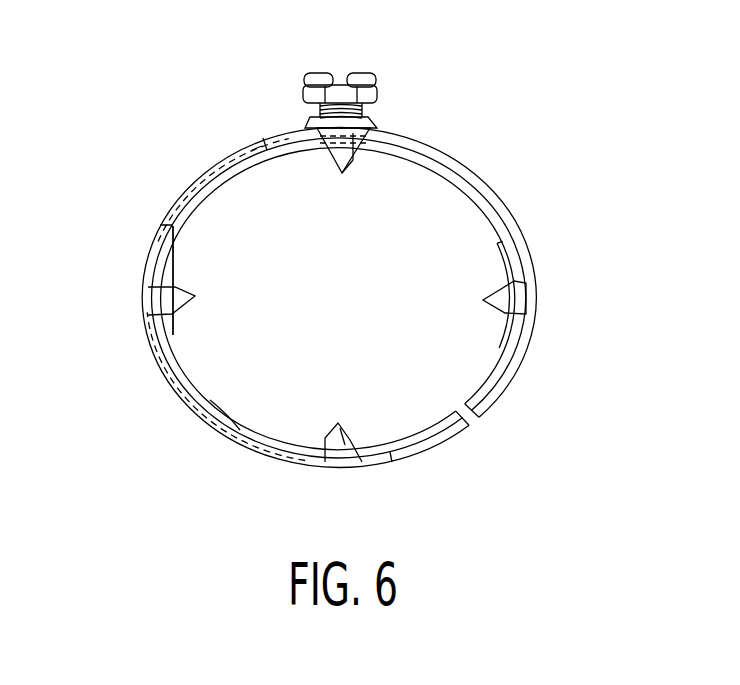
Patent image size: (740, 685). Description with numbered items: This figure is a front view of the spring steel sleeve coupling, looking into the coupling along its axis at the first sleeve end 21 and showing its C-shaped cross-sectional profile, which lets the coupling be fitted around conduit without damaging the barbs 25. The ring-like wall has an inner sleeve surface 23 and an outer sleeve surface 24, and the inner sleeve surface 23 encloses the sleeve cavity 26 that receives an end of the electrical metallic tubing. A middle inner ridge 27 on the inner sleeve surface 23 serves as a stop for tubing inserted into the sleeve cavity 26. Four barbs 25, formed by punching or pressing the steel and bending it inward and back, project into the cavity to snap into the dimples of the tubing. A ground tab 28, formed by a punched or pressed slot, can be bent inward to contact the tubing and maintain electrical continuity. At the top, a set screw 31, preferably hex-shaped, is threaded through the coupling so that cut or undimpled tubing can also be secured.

The first sleeve end 21 is at (173, 207).
The inner sleeve surface 23 is at (227, 407).
The outer sleeve surface 24 is at (220, 156).
The barbs 25 is at (383, 147).
The sleeve cavity 26 is at (405, 353).
The middle inner ridge 27 is at (260, 147).
The ground tab 28 is at (515, 238).
The set screw 31 is at (367, 78).